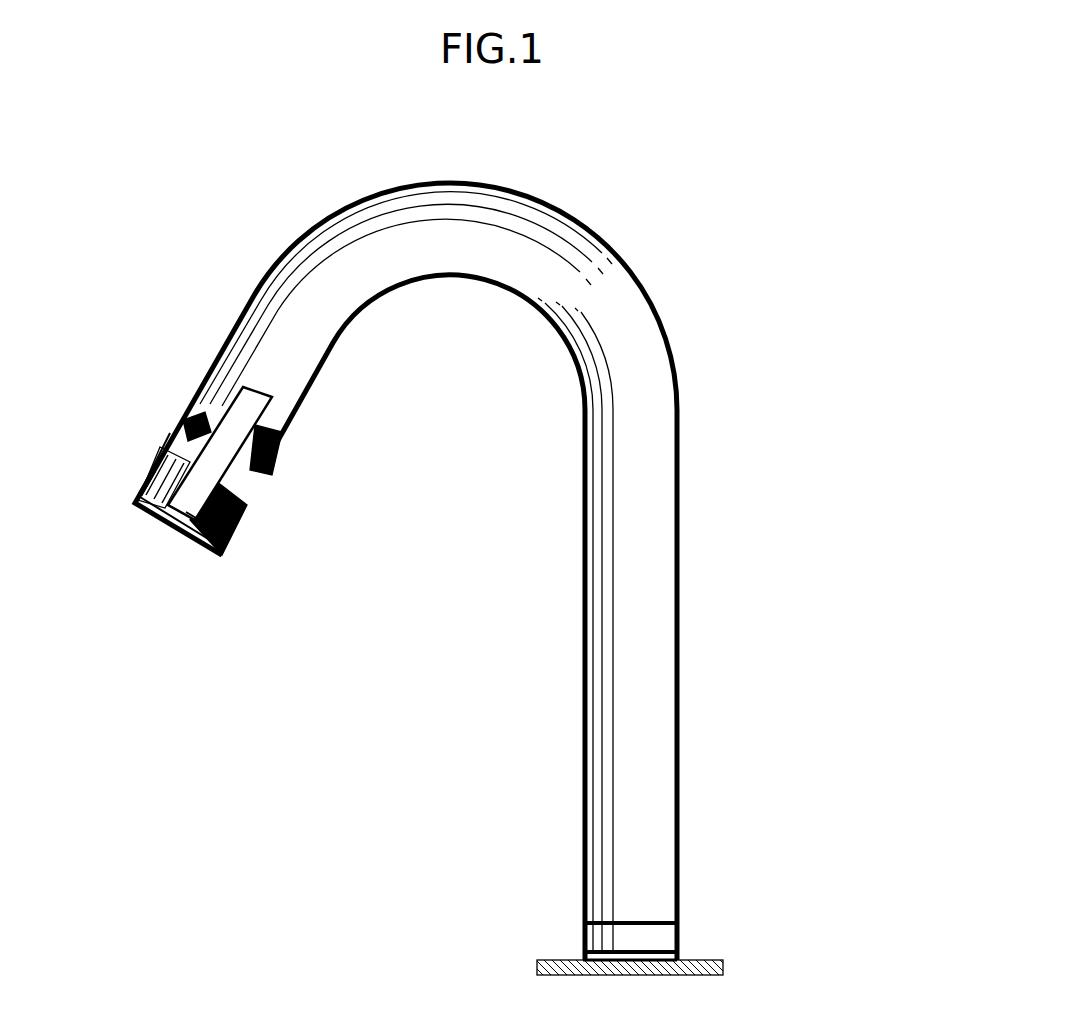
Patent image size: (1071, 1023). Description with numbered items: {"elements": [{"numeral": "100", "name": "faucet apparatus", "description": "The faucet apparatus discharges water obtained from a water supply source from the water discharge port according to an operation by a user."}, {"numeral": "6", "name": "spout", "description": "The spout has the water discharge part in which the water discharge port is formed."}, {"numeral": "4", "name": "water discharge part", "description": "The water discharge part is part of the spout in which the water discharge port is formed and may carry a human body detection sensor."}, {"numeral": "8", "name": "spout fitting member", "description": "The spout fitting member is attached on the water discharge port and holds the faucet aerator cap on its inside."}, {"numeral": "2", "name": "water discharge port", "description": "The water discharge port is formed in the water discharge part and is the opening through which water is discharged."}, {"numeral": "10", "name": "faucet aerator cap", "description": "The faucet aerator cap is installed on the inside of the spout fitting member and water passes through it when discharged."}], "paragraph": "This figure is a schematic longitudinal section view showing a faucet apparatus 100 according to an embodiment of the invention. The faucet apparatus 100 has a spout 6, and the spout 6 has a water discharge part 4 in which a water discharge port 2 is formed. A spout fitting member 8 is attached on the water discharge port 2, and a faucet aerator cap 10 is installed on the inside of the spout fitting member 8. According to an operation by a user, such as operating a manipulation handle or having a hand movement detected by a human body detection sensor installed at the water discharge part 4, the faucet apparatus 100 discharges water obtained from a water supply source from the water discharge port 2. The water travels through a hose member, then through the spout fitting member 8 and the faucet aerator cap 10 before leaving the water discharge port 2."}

The faucet 100 is at (490, 579).
The spout body / tube 6 is at (690, 540).
The spray head 4 is at (148, 468).
The lever handle 8 is at (255, 477).
The discharge outlet 2 is at (190, 512).
The switch button 10 is at (196, 520).